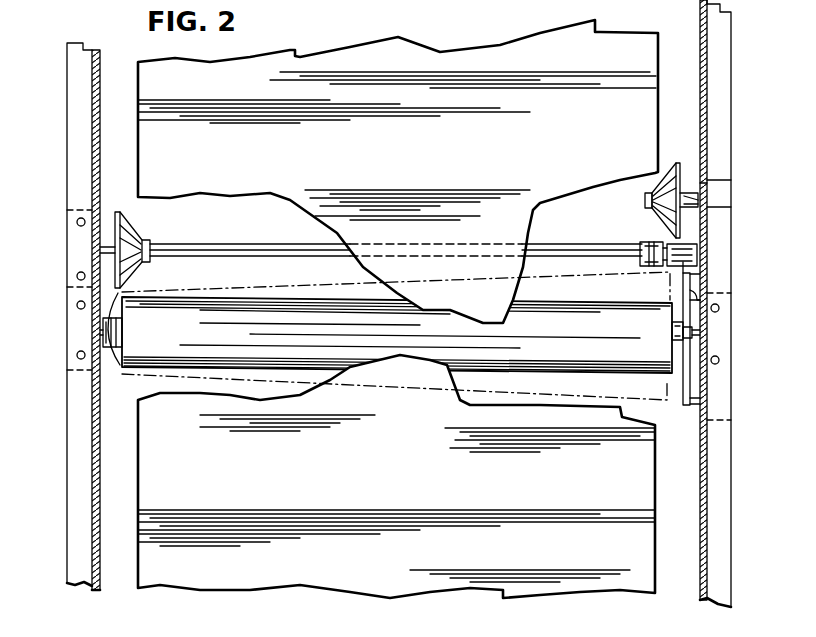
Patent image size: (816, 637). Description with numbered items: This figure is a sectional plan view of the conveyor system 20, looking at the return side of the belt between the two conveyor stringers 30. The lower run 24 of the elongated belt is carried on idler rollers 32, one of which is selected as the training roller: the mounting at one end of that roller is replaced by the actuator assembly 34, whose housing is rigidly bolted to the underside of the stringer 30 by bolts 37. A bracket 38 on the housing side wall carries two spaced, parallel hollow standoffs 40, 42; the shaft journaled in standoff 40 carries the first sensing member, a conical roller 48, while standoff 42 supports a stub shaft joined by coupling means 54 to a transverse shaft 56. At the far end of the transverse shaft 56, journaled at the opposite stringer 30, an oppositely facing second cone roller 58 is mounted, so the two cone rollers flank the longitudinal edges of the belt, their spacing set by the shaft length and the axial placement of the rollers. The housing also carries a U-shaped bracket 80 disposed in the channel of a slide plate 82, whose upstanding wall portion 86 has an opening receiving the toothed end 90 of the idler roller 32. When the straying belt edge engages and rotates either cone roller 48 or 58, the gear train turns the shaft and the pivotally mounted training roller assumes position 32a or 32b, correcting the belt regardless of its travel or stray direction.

The conveyor system 20 is at (733, 58).
The lower run 24 is at (460, 50).
The conveyor stringer 30 is at (73, 468).
The idler roller 32 is at (181, 360).
The training roller position 32a is at (270, 276).
The training roller position 32b is at (380, 385).
The actuator assembly 34 is at (652, 228).
The bolts 37 is at (719, 306).
The bracket 38 is at (698, 190).
The standoff 40 is at (732, 200).
The standoff 42 is at (690, 250).
The conical roller 48 is at (674, 168).
The coupling means 54 is at (640, 243).
The transverse shaft 56 is at (236, 247).
The cone roller 58 is at (130, 231).
The U-shaped bracket 80 is at (687, 385).
The slide plate 82 is at (687, 288).
The upstanding wall portion 86 is at (683, 350).
The toothed end 90 is at (688, 335).